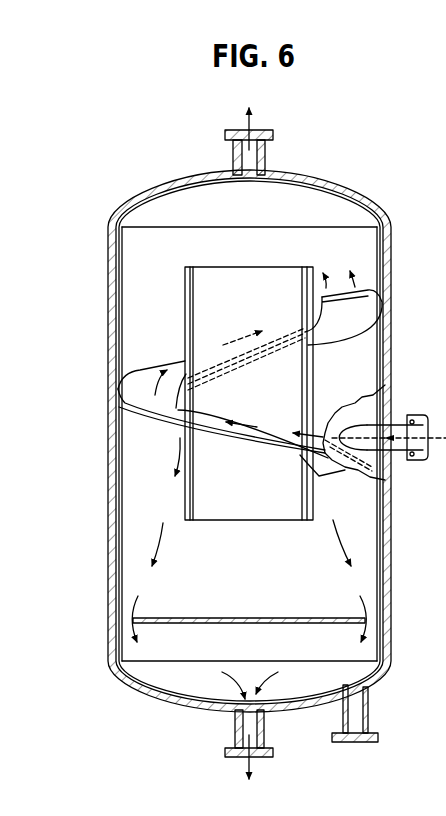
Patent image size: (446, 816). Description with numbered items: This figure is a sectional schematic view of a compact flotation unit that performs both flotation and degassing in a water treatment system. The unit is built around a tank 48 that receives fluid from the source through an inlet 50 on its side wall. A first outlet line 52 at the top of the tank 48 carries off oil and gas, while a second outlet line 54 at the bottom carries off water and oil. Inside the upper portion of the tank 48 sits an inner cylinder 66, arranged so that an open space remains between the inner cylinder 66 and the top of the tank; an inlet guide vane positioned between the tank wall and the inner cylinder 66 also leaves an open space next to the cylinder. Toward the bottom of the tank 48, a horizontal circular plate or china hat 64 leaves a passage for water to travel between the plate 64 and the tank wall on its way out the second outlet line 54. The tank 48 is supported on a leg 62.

The tank 48 is at (390, 555).
The inlet 50 is at (413, 416).
The first outlet line 52 is at (262, 151).
The second outlet line 54 is at (234, 735).
The support leg 62 is at (368, 712).
The horizontal circular plate 64 is at (277, 617).
The inner cylinder 66 is at (123, 385).